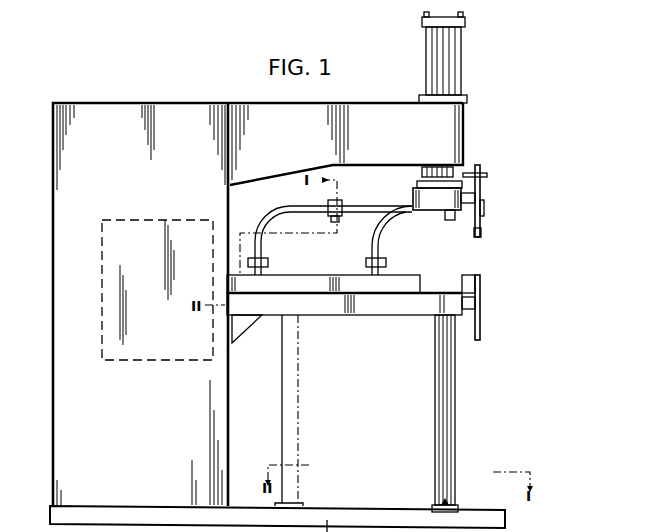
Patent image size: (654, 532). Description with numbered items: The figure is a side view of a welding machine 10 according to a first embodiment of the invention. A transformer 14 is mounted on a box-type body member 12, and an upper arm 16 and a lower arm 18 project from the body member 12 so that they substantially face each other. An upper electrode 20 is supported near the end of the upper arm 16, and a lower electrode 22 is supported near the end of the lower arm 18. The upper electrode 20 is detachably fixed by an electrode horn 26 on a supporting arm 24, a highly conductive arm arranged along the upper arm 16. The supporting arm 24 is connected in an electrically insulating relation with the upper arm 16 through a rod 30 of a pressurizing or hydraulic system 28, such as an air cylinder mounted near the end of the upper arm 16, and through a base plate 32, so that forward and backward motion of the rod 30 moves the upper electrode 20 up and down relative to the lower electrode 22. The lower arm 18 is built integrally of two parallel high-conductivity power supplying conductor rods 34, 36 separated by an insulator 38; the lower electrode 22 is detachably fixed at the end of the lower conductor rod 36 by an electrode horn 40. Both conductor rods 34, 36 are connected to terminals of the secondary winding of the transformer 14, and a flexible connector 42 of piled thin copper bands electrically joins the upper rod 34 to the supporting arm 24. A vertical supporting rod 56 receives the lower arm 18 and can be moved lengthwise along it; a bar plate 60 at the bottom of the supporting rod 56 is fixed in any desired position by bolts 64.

The welding machine 10 is at (550, 56).
The box-type body member 12 is at (174, 117).
The transformer 14 is at (116, 290).
The upper arm 16 is at (452, 148).
The lower arm 18 is at (437, 283).
The upper electrode 20 is at (499, 241).
The lower electrode 22 is at (493, 307).
The supporting arm 24 is at (428, 208).
The electrode horn 26 is at (502, 215).
The pressurizing or hydraulic system 28 is at (452, 60).
The rod 30 is at (487, 176).
The base plate 32 is at (492, 196).
The conductor rod 34 is at (310, 285).
The conductor rod 36 is at (332, 310).
The insulator 38 is at (383, 297).
The electrode horn 40 is at (493, 314).
The flexible connector 42 is at (281, 210).
The supporting rod 56 is at (453, 400).
The bar plate 60 is at (456, 513).
The bolts 64 is at (452, 500).